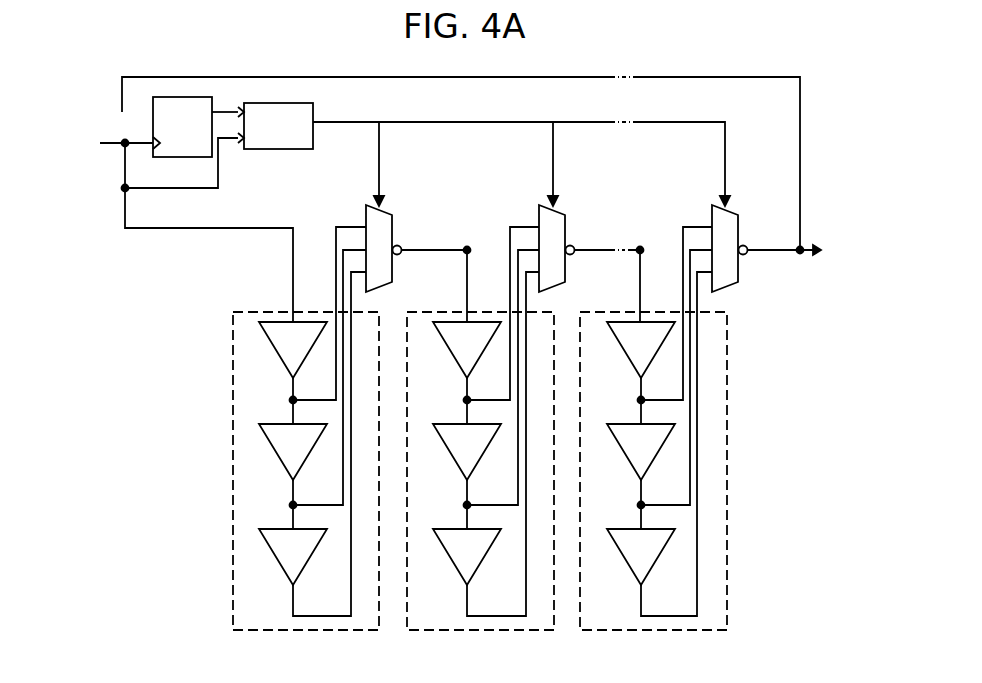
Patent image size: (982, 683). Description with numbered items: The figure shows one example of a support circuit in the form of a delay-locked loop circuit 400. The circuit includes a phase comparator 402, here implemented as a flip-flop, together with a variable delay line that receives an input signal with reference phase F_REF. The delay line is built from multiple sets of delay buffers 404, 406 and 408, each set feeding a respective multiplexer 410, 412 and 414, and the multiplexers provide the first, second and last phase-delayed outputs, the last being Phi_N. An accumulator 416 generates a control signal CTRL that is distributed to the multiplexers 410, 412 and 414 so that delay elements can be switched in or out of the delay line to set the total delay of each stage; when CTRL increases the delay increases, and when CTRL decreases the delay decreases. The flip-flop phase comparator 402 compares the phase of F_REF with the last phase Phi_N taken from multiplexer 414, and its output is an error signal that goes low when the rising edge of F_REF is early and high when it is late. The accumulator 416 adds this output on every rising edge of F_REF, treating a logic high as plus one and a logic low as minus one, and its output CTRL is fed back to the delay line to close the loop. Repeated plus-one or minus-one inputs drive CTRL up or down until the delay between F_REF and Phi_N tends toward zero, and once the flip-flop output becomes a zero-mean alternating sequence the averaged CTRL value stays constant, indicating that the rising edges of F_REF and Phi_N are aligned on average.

The delay-locked loop circuit 400 is at (819, 84).
The phase comparator 402 is at (195, 158).
The accumulator 416 is at (318, 115).
The multiplexer 410 is at (398, 232).
The multiplexer 412 is at (571, 232).
The multiplexer 414 is at (743, 232).
The set of delay buffers 404 is at (233, 527).
The set of delay buffers 406 is at (543, 630).
The set of delay buffers 408 is at (727, 386).